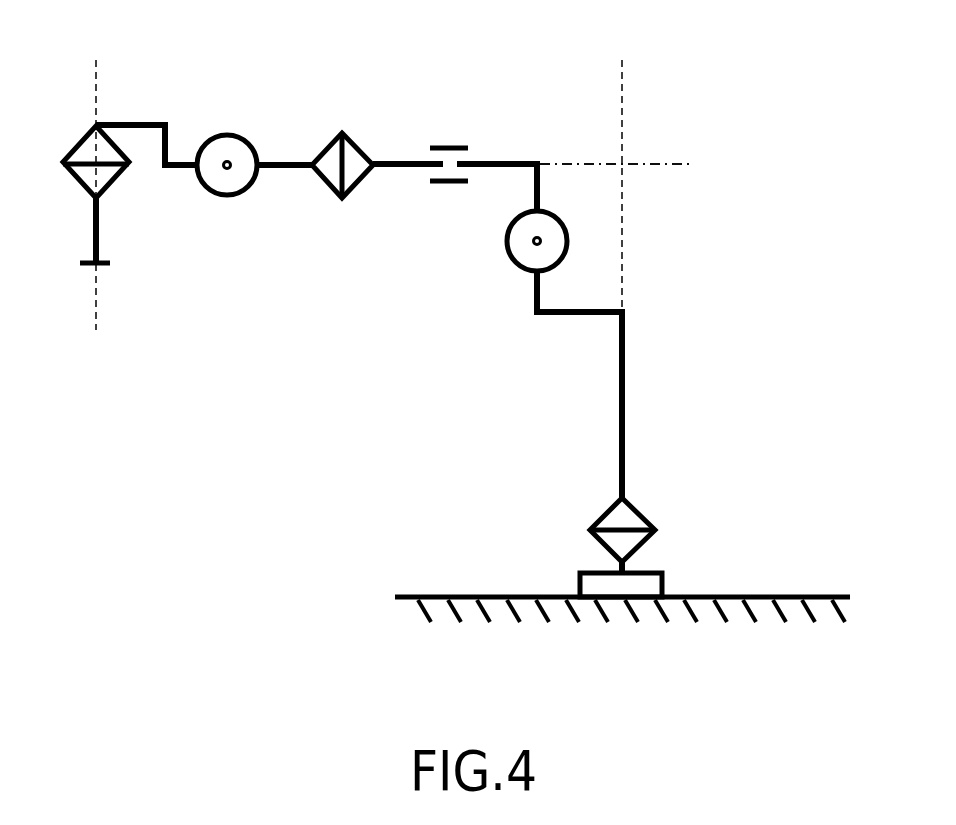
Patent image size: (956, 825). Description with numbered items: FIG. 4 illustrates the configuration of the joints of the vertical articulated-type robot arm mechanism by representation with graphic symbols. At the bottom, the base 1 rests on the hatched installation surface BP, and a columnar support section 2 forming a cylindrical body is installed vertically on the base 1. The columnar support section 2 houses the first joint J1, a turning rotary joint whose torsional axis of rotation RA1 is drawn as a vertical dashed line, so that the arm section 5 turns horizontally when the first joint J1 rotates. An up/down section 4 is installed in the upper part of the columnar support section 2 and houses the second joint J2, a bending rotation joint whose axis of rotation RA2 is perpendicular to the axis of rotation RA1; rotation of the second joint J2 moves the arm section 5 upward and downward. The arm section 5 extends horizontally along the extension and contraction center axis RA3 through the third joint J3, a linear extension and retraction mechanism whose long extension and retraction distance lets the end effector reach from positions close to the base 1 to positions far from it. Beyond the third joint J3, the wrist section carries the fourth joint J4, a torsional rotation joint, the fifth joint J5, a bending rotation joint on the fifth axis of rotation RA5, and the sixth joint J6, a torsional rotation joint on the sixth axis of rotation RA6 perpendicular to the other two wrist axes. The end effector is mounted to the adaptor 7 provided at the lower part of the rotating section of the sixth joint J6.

The base 1 is at (580, 585).
The columnar support section 2 is at (640, 421).
The up/down section 4 is at (580, 228).
The arm section 5 is at (401, 140).
The adaptor 7 is at (112, 264).
The first joint J1 is at (645, 530).
The second joint J2 is at (548, 254).
The third joint J3 is at (449, 136).
The fourth joint J4 is at (342, 145).
The fifth joint J5 is at (227, 144).
The sixth joint J6 is at (74, 162).
The axis of rotation RA1 is at (625, 166).
The axis of rotation RA2 is at (543, 236).
The extension and contraction center axis RA3 is at (676, 161).
The fifth axis of rotation RA5 is at (232, 158).
The sixth axis of rotation RA6 is at (102, 175).
The base plane (installation surface) BP is at (622, 594).